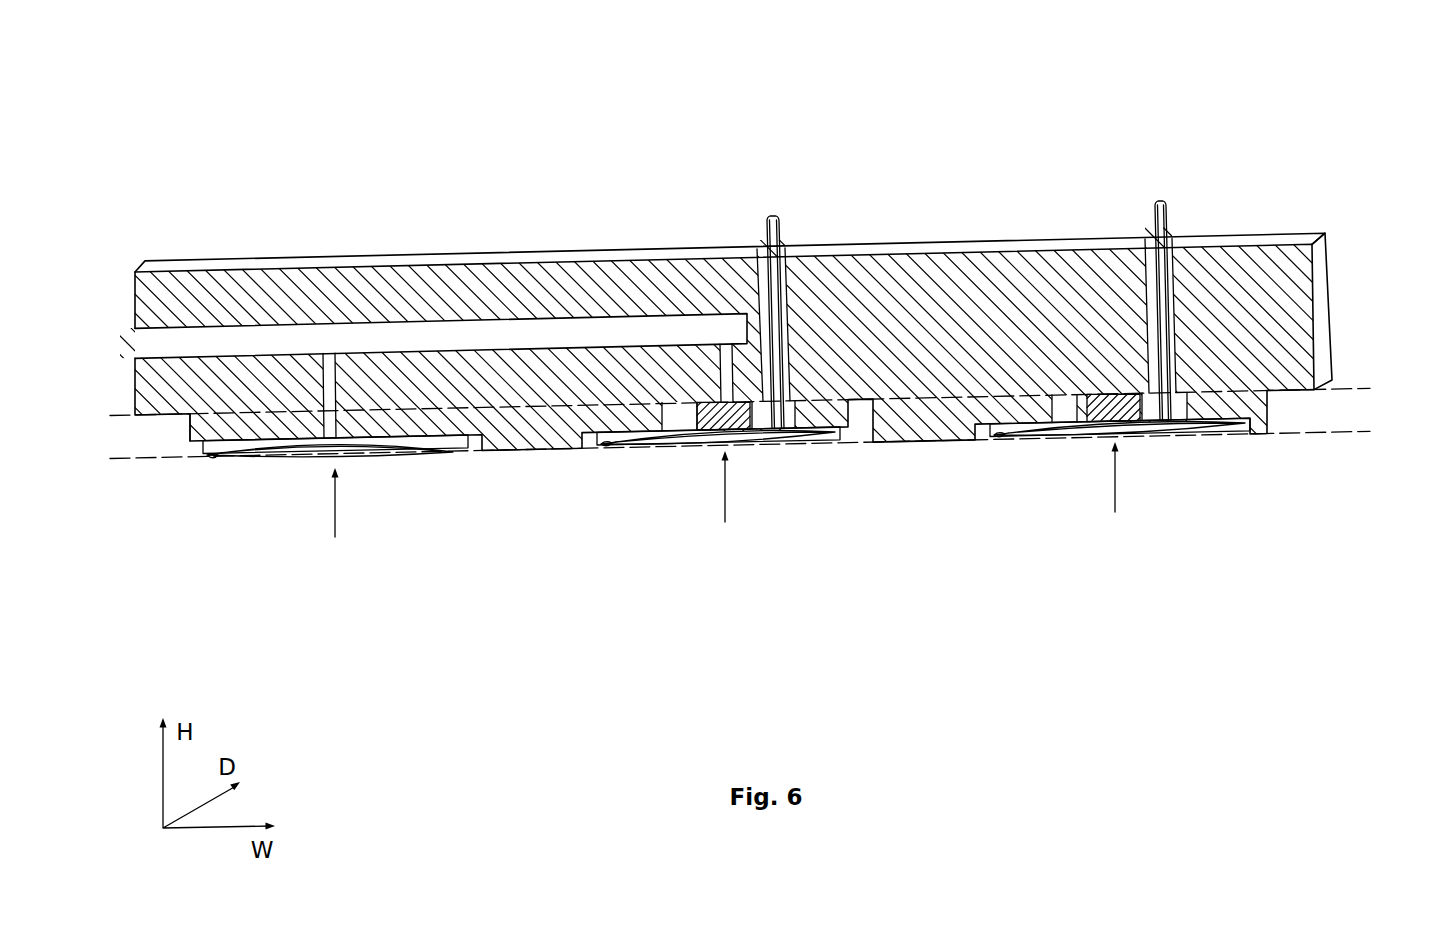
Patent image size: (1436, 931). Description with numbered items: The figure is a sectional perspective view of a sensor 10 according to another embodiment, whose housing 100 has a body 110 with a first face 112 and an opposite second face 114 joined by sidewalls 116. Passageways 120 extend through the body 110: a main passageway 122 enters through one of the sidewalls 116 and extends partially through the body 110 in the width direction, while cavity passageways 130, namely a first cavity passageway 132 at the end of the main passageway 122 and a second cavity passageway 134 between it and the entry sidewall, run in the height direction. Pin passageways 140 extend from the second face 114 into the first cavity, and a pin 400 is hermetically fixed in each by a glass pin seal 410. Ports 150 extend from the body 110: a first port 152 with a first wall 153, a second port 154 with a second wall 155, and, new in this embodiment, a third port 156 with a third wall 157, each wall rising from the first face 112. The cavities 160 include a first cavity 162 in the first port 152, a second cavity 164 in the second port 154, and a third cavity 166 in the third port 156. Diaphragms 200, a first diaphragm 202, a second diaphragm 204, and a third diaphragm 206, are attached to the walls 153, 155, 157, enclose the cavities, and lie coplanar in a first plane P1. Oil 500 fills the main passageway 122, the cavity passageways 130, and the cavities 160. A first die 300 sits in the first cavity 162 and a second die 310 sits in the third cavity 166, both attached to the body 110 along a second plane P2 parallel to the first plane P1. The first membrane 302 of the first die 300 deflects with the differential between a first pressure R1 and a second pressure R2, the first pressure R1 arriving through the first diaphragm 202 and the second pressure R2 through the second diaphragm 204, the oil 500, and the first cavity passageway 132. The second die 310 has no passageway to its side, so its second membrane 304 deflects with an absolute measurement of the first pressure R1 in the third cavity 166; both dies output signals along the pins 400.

The sensor 10 is at (186, 46).
The housing 100 is at (407, 250).
The body 110 is at (718, 318).
The first face 112 is at (188, 425).
The second face 114 is at (1220, 240).
The sidewalls 116 is at (135, 300).
The passageways 120 is at (96, 363).
The main passageway 122 is at (146, 345).
The cavity passageways 130 is at (665, 300).
The first cavity passageway 132 is at (725, 334).
The second cavity passageway 134 is at (330, 446).
The pin passageways 140 is at (790, 266).
The ports 150 is at (728, 509).
The first port 152 is at (764, 501).
The second port 154 is at (282, 519).
The third port 156 is at (1155, 493).
The first wall 153 is at (577, 441).
The second wall 155 is at (487, 450).
The third wall 157 is at (953, 441).
The cavities 160 is at (330, 450).
The first cavity 162 is at (672, 431).
The second cavity 164 is at (368, 447).
The third cavity 166 is at (1060, 425).
The diaphragms 200 is at (213, 455).
The first diaphragm 202 is at (711, 447).
The second diaphragm 204 is at (251, 458).
The third diaphragm 206 is at (1095, 434).
The first die 300 is at (772, 488).
The first membrane 302 is at (740, 430).
The second die 310 is at (1161, 479).
The second membrane 304 is at (1127, 423).
The pins 400 is at (773, 216).
The pin seal 410 is at (757, 298).
The oil 500 is at (382, 352).
The first plane P1 is at (757, 438).
The second plane P2 is at (757, 395).
The first pressure R1 is at (937, 485).
The second pressure R2 is at (352, 505).